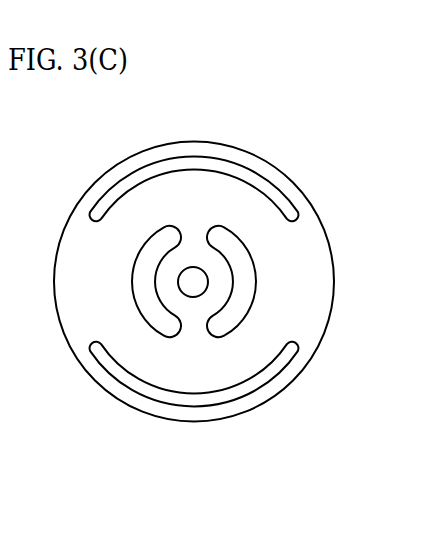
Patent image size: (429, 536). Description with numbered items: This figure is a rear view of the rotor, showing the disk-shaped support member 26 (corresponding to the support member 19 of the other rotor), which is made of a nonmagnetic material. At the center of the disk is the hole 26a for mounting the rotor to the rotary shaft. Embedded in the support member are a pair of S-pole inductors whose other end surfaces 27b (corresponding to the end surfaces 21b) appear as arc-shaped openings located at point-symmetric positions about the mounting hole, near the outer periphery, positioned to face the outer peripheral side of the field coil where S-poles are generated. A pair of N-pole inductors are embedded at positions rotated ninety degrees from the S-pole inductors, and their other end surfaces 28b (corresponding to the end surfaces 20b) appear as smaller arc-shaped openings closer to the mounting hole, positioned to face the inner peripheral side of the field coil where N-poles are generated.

The support member 26 is at (223, 282).
The support member 19 is at (312, 367).
The hole 26a is at (195, 282).
The other end surface 27b is at (194, 287).
The other end surface 21b is at (196, 163).
The other end surface 28b is at (221, 297).
The other end surface 20b is at (258, 293).